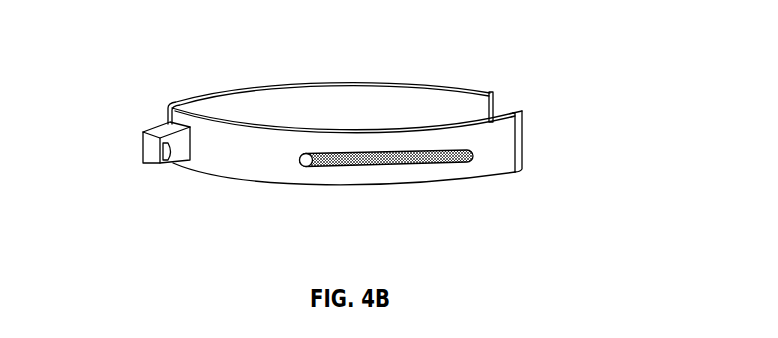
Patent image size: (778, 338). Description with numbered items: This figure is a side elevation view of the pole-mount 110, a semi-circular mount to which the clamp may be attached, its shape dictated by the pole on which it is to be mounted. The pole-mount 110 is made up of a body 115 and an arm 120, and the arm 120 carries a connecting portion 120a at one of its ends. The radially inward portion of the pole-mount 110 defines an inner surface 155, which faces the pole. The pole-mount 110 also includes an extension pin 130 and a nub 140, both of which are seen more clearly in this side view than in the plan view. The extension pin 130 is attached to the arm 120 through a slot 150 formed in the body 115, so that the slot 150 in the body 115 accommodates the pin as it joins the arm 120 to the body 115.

The pole-mount 110 is at (550, 262).
The body 115 is at (405, 172).
The arm 120 is at (427, 150).
The connecting portion 120a is at (537, 181).
The extension pin 130 is at (303, 164).
The nub 140 is at (146, 183).
The slot 150 is at (340, 129).
The inner surface 155 is at (402, 98).